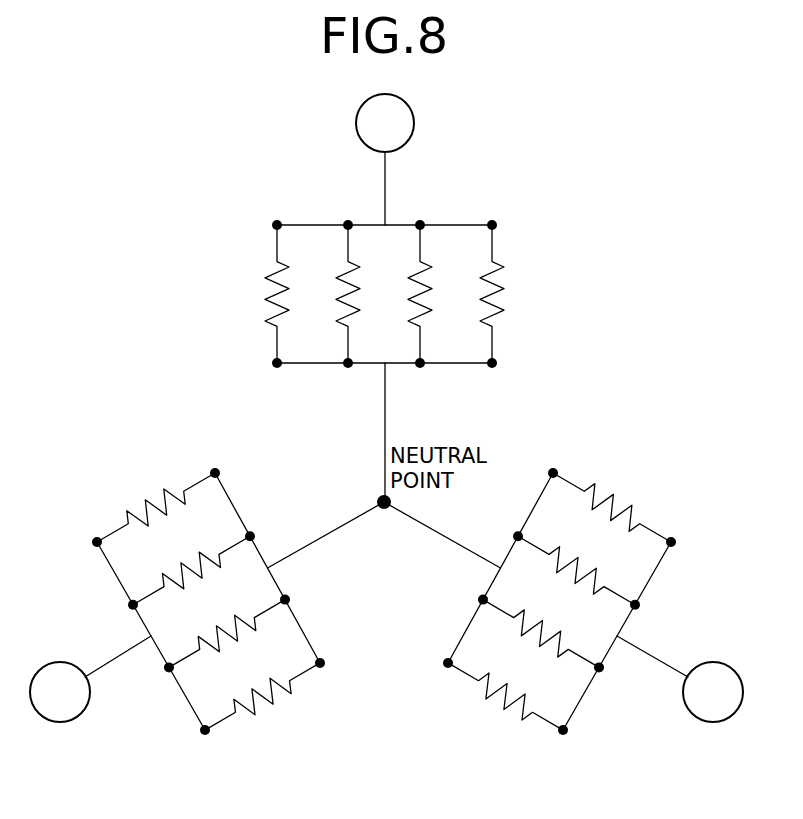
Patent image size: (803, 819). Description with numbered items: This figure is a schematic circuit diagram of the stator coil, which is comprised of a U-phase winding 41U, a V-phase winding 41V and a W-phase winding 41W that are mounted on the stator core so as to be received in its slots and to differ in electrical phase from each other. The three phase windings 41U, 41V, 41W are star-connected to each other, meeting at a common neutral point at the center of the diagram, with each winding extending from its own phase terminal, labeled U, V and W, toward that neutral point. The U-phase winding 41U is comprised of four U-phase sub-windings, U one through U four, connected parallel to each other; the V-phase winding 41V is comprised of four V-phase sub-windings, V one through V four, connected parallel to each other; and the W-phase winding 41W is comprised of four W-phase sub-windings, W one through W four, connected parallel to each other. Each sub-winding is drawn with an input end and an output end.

The U-phase winding 41U is at (388, 171).
The V-phase winding 41V is at (98, 668).
The W-phase winding 41W is at (673, 672).